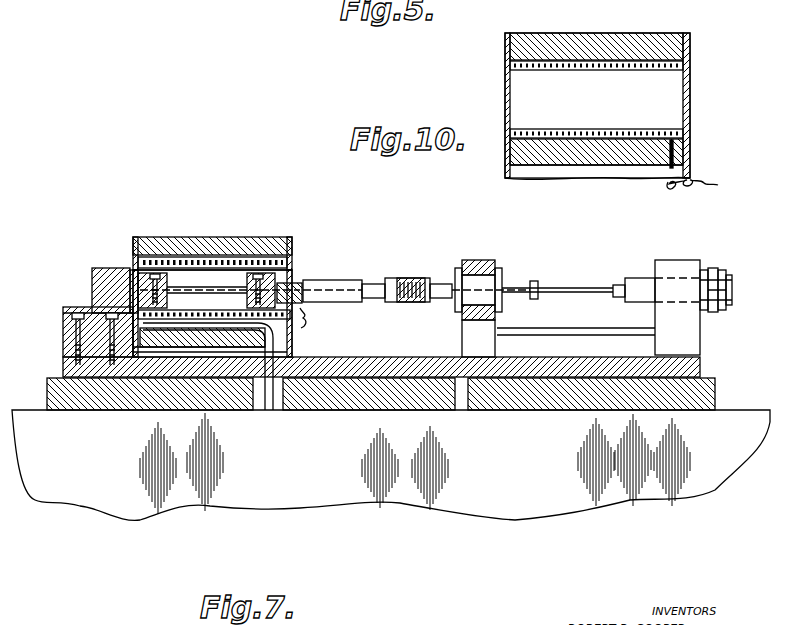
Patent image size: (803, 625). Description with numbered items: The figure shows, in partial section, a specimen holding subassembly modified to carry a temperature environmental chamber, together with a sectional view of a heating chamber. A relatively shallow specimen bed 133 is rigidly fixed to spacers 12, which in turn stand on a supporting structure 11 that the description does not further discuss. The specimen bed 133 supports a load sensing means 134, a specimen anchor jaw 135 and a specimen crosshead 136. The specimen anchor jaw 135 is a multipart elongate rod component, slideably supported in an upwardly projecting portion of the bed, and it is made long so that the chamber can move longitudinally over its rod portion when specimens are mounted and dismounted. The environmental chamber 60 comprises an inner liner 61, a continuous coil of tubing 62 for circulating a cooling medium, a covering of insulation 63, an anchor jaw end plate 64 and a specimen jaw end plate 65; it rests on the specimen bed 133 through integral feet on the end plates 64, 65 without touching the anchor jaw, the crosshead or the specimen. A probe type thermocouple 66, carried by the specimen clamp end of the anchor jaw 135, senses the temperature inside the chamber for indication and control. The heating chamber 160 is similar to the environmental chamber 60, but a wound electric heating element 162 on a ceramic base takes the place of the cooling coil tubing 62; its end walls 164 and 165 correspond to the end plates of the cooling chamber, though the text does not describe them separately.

In FIG. 10, the heating chamber 160 is at (596, 96).
In FIG. 10, the wound electric heating element 162 is at (683, 71).
In FIG. 10, the end wall 164 is at (690, 52).
In FIG. 10, the hatched body 165 is at (505, 52).
In FIG. 7, the environmental chamber 60 is at (178, 228).
In FIG. 7, the inner liner 61 is at (218, 270).
In FIG. 7, the continuous coil of tubing 62 is at (278, 264).
In FIG. 7, the covering of insulation 63 is at (250, 248).
In FIG. 7, the anchor jaw end plate 64 is at (292, 244).
In FIG. 7, the specimen jaw end plate 65 is at (133, 245).
In FIG. 7, the probe type thermocouple 66 is at (236, 302).
In FIG. 7, the specimen crosshead 136 is at (108, 277).
In FIG. 7, the specimen anchor jaw 135 is at (371, 283).
In FIG. 7, the load sensing means 134 is at (570, 288).
In FIG. 7, the specimen bed 133 is at (680, 365).
In FIG. 7, the spacers 12 is at (97, 398).
In FIG. 7, the ground 11 is at (315, 490).